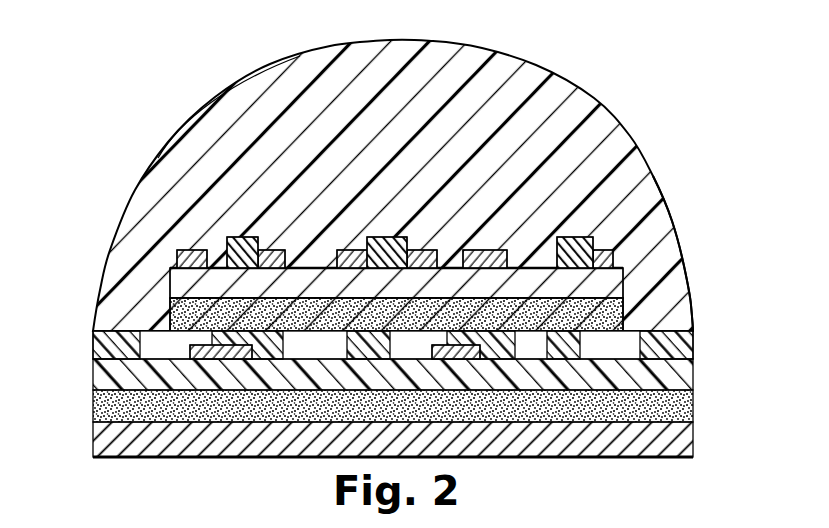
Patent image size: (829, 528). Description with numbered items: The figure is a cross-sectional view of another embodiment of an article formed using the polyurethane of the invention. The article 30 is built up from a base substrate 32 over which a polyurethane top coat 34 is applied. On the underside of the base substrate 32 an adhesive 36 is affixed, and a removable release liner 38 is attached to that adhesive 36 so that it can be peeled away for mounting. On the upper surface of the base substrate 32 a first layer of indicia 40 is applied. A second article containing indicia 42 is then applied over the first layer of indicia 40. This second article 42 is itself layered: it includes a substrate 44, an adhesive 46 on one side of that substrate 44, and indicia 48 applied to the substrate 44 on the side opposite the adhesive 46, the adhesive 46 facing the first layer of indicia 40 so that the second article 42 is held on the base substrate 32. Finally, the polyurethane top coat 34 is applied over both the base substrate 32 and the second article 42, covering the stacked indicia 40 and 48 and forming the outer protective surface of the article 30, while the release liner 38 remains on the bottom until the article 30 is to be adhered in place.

The article 30 is at (398, 273).
The base substrate 32 is at (118, 376).
The polyurethane top coat 34 is at (520, 87).
The adhesive 36 is at (115, 408).
The removable release liner 38 is at (156, 448).
The first layer of indicia 40 is at (117, 350).
The second article containing indicia 42 is at (359, 210).
The substrate 44 is at (594, 278).
The adhesive 46 is at (679, 258).
The indicia 48 is at (567, 234).